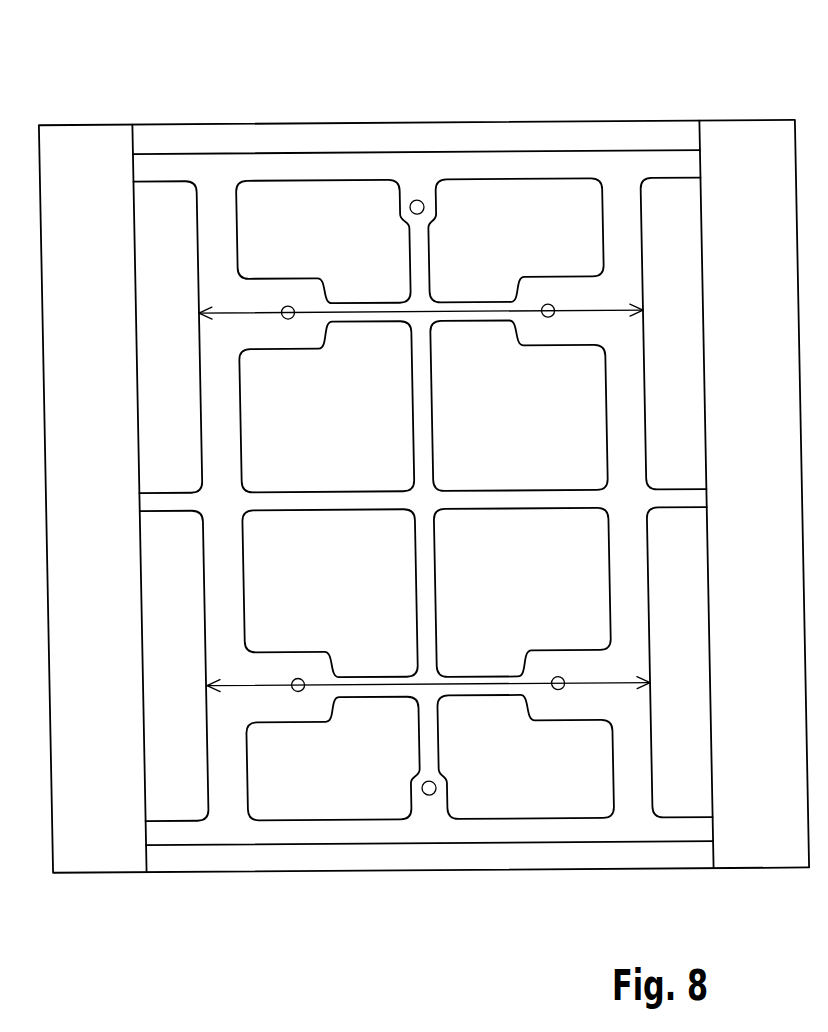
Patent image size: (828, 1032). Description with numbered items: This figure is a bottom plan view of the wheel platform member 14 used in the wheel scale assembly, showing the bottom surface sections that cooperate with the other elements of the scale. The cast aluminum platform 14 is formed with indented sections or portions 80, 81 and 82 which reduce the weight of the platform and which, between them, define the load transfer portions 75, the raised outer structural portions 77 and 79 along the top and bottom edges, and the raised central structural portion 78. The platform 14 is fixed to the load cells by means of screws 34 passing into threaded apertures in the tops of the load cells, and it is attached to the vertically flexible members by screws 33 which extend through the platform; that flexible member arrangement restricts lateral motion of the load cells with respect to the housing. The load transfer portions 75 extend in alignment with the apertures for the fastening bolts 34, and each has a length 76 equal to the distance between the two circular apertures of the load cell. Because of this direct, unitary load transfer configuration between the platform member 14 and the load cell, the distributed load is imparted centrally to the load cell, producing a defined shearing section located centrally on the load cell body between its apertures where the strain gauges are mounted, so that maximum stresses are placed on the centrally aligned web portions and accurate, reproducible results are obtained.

The wheel platform member 14 is at (548, 97).
The screws 33 is at (417, 208).
The screws 34 is at (286, 308).
The load transfer portions 75 is at (291, 340).
The length 76 is at (226, 316).
The raised outer structural portion 77 is at (304, 162).
The raised central structural portion 78 is at (524, 501).
The raised outer structural portion 79 is at (287, 834).
The indented sections 80 is at (343, 452).
The indented sections 81 is at (258, 228).
The indented sections 82 is at (650, 280).